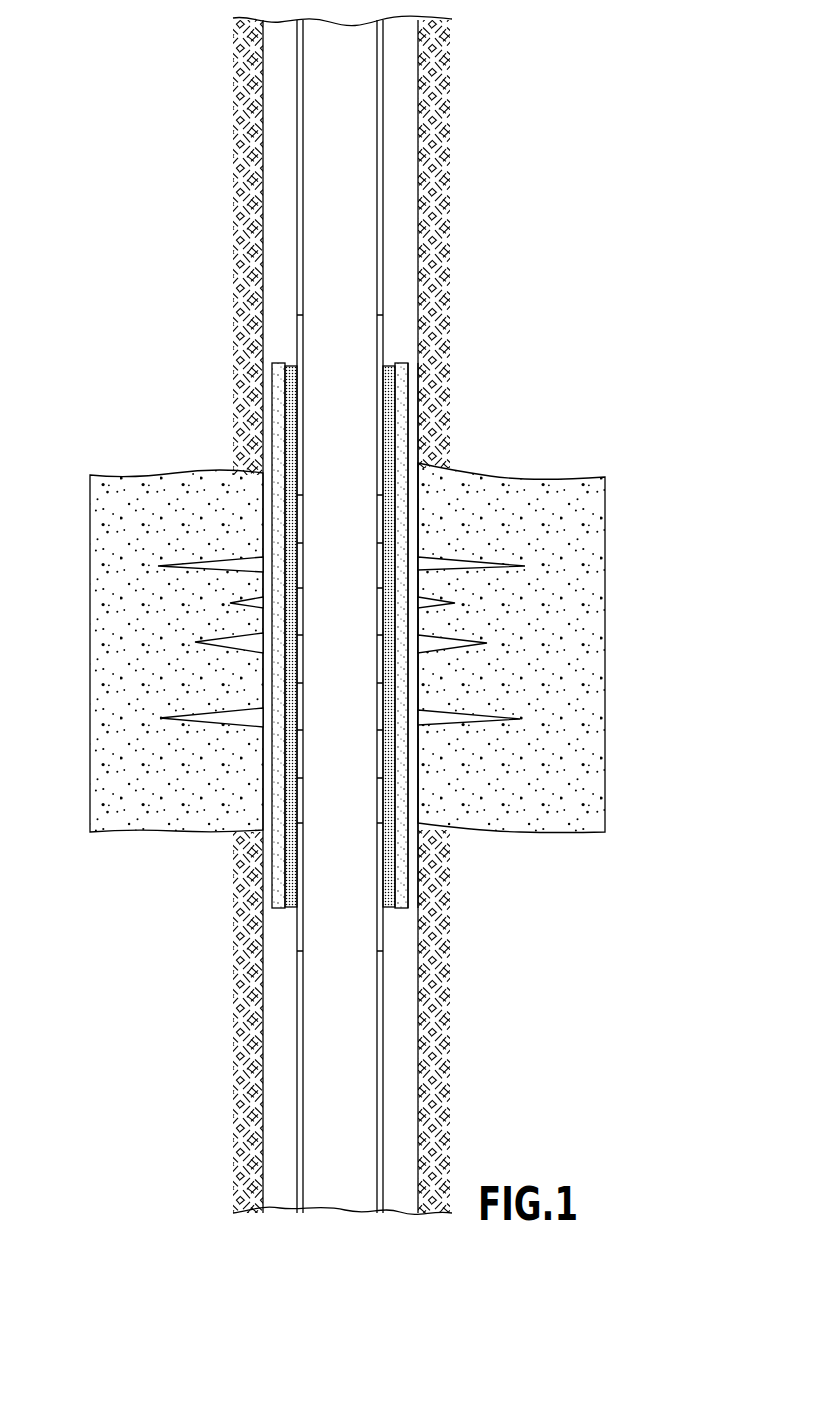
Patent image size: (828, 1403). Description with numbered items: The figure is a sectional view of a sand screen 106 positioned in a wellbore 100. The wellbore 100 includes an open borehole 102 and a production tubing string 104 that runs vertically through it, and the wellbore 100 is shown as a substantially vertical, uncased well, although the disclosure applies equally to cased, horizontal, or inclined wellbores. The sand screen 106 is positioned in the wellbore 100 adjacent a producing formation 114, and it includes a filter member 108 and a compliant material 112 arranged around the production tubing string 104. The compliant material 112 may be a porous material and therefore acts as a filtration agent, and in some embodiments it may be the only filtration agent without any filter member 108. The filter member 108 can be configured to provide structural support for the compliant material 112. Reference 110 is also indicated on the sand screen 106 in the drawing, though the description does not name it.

The wellbore 100 is at (588, 116).
The open borehole 102 is at (262, 276).
The production tubing string 104 is at (378, 278).
The sand screen 106 is at (418, 822).
The filter member 108 is at (397, 438).
The outer surface of sleeve 110 is at (409, 788).
The compliant material 112 is at (410, 862).
The producing formation 114 is at (594, 532).